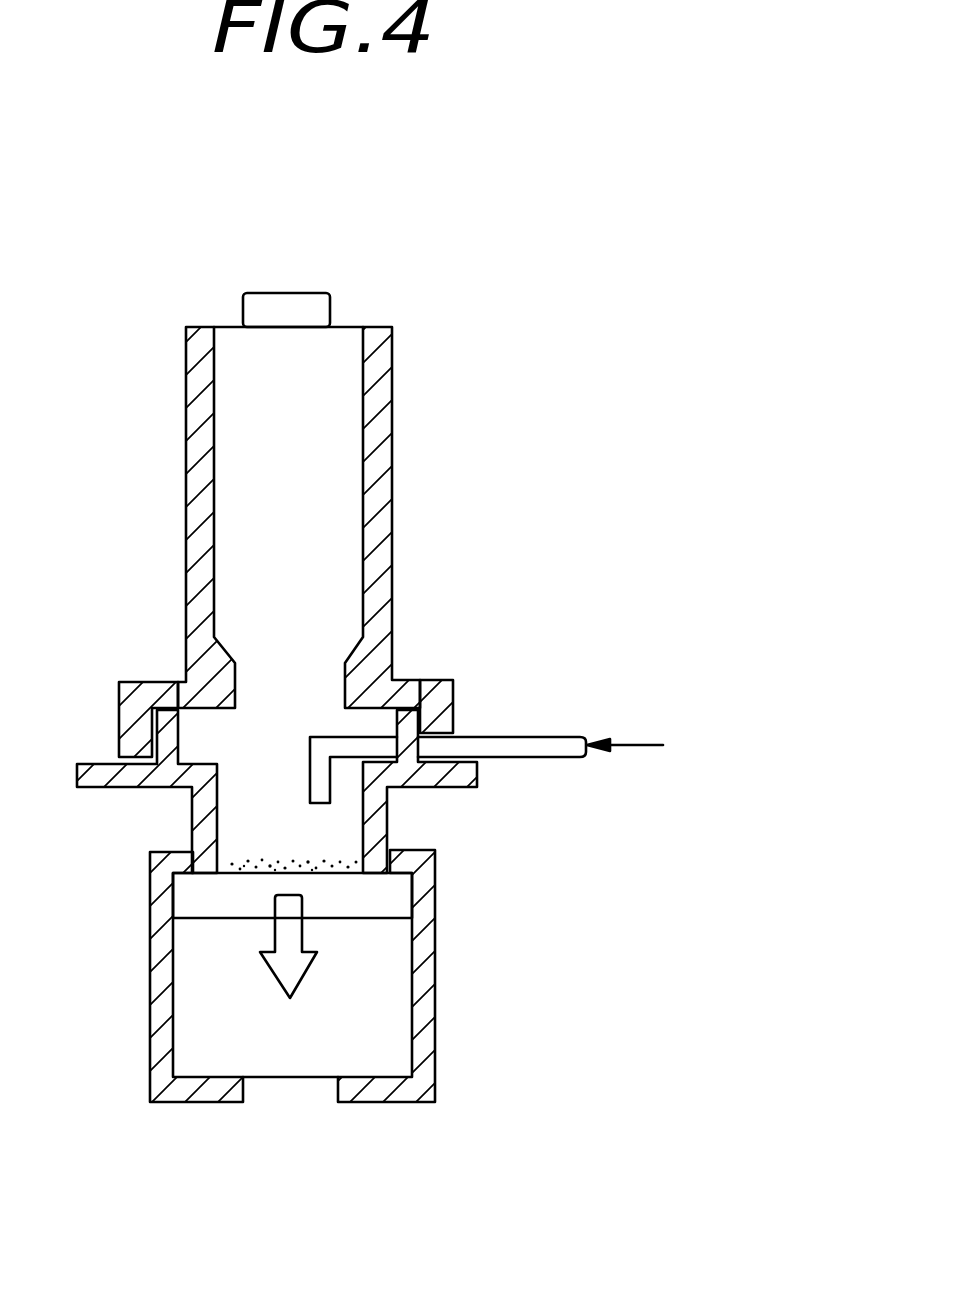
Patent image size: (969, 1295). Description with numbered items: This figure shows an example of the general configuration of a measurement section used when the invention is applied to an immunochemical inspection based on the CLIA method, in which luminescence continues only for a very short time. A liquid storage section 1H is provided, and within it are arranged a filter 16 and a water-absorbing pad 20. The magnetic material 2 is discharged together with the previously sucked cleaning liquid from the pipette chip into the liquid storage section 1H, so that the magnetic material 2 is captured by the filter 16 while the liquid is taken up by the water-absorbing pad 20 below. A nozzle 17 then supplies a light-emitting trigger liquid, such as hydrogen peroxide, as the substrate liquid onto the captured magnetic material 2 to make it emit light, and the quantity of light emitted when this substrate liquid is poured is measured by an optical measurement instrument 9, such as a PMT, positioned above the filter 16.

The optical measurement instrument 9 is at (340, 468).
The nozzle 17 is at (523, 735).
The magnetic material 2 is at (273, 866).
The filter 16 is at (398, 893).
The liquid storage section 1H is at (154, 990).
The water-absorbing pad 20 is at (390, 1013).